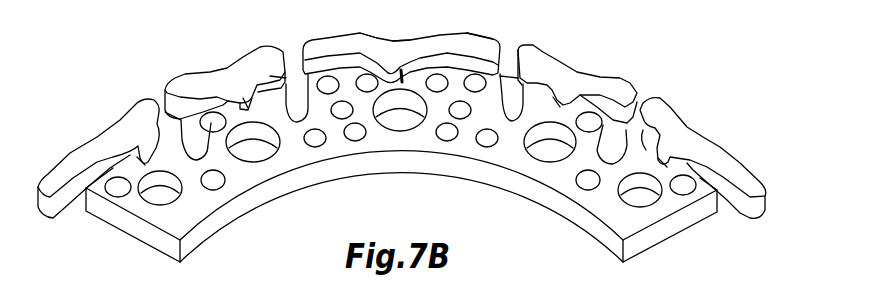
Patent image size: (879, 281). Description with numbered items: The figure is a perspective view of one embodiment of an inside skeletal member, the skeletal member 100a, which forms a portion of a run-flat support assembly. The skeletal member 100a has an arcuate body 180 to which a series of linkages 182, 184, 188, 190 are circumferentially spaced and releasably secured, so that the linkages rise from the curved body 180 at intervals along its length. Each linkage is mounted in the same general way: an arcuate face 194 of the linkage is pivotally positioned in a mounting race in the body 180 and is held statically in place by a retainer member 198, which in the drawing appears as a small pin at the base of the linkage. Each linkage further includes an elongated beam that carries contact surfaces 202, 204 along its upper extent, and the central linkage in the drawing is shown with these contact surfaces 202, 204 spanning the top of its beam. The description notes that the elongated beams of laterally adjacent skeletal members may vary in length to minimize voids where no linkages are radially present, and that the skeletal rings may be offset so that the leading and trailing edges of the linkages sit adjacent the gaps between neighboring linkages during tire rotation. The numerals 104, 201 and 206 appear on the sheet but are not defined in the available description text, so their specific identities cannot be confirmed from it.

The skeletal member 100a is at (668, 62).
The tissue 104 is at (157, 0).
The body 180 is at (123, 233).
The linkage 182 is at (100, 137).
The linkage 184 is at (237, 68).
The linkage 188 is at (625, 72).
The linkage 190 is at (703, 137).
The arcuate face 194 is at (373, 83).
The retainer member 198 is at (403, 84).
The central tab right portion 201 is at (500, 40).
The contact surface 202 is at (342, 38).
The contact surface 204 is at (392, 72).
The central tab notch 206 is at (402, 40).